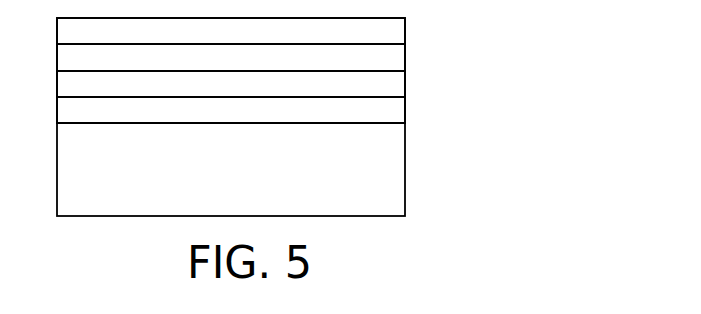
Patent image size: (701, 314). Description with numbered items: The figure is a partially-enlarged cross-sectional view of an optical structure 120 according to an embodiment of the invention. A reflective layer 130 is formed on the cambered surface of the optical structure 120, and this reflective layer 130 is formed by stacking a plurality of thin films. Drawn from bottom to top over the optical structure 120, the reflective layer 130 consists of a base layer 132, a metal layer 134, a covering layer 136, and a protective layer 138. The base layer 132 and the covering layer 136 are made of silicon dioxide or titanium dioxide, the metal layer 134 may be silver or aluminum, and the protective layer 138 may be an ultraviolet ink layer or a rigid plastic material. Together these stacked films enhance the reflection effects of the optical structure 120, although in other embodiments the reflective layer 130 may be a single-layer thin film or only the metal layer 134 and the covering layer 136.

The protective layer 138 is at (405, 29).
The covering layer 136 is at (405, 58).
The metal layer 134 is at (405, 86).
The base layer 132 is at (405, 113).
The reflective layer 130 is at (482, 20).
The optical structure 120 is at (405, 168).